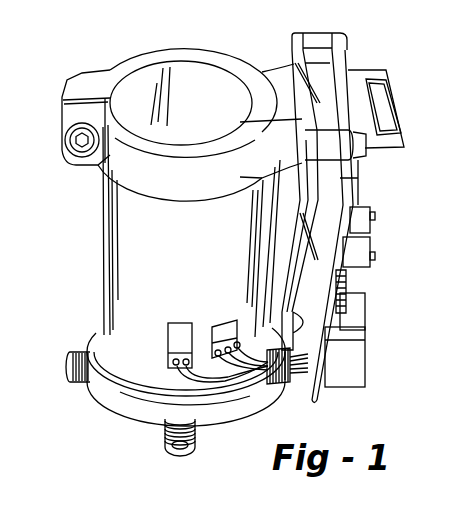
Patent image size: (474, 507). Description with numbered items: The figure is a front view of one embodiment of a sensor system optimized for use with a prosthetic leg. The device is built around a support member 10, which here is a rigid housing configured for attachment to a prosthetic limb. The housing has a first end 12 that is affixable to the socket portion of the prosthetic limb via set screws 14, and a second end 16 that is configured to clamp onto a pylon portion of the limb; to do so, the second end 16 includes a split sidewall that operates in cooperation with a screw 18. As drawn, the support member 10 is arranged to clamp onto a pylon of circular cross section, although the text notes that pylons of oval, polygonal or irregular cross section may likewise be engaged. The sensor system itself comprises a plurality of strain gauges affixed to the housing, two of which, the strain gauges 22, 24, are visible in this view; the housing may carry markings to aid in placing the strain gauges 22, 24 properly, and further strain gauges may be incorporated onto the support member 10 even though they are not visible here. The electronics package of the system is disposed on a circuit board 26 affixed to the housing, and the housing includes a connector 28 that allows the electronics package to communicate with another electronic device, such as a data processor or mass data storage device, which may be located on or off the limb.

The support member 10 is at (132, 238).
The first end 12 is at (122, 415).
The set screws 14 is at (84, 383).
The second end 16 is at (205, 78).
The screw 18 is at (72, 160).
The strain gauge 22 is at (182, 324).
The strain gauge 24 is at (236, 320).
The circuit board 26 is at (350, 62).
The connector 28 is at (376, 90).